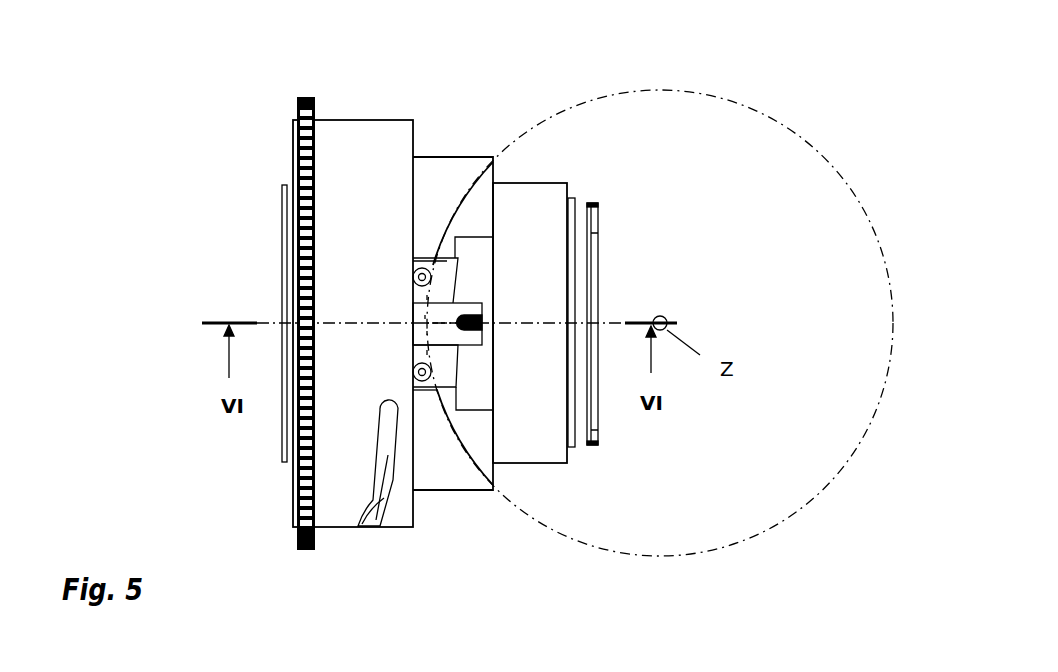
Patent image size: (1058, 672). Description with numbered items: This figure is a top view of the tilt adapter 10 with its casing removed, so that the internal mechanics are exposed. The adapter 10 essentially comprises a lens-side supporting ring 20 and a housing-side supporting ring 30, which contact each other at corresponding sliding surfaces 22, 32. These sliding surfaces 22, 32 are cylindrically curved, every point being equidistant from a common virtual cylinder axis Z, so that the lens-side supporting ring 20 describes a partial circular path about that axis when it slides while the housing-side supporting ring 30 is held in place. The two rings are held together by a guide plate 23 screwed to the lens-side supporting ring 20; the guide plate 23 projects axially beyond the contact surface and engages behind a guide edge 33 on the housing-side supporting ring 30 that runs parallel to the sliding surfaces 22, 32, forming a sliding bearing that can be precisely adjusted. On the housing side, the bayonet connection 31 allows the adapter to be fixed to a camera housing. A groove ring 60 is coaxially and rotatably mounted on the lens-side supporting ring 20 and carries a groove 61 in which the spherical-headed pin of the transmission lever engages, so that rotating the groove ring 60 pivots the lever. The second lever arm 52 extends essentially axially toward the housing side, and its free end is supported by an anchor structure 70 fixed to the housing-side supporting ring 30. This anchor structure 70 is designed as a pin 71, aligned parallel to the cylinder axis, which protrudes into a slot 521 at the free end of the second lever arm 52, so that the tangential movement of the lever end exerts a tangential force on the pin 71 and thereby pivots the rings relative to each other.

The adapter 10 is at (152, 185).
The lens-side supporting ring 20 is at (283, 203).
The sliding surface 22 is at (480, 192).
The guide plate 23 is at (445, 270).
The housing-side supporting ring 30 is at (528, 195).
The bayonet connection 31 is at (588, 428).
The sliding surface 32 is at (450, 204).
The guide edge 33 is at (450, 397).
The second lever arm 52 is at (443, 312).
The slot 521 is at (482, 322).
The groove ring 60 is at (347, 135).
The groove 61 is at (383, 448).
The anchor structure 70 is at (620, 285).
The pin 71 is at (480, 318).